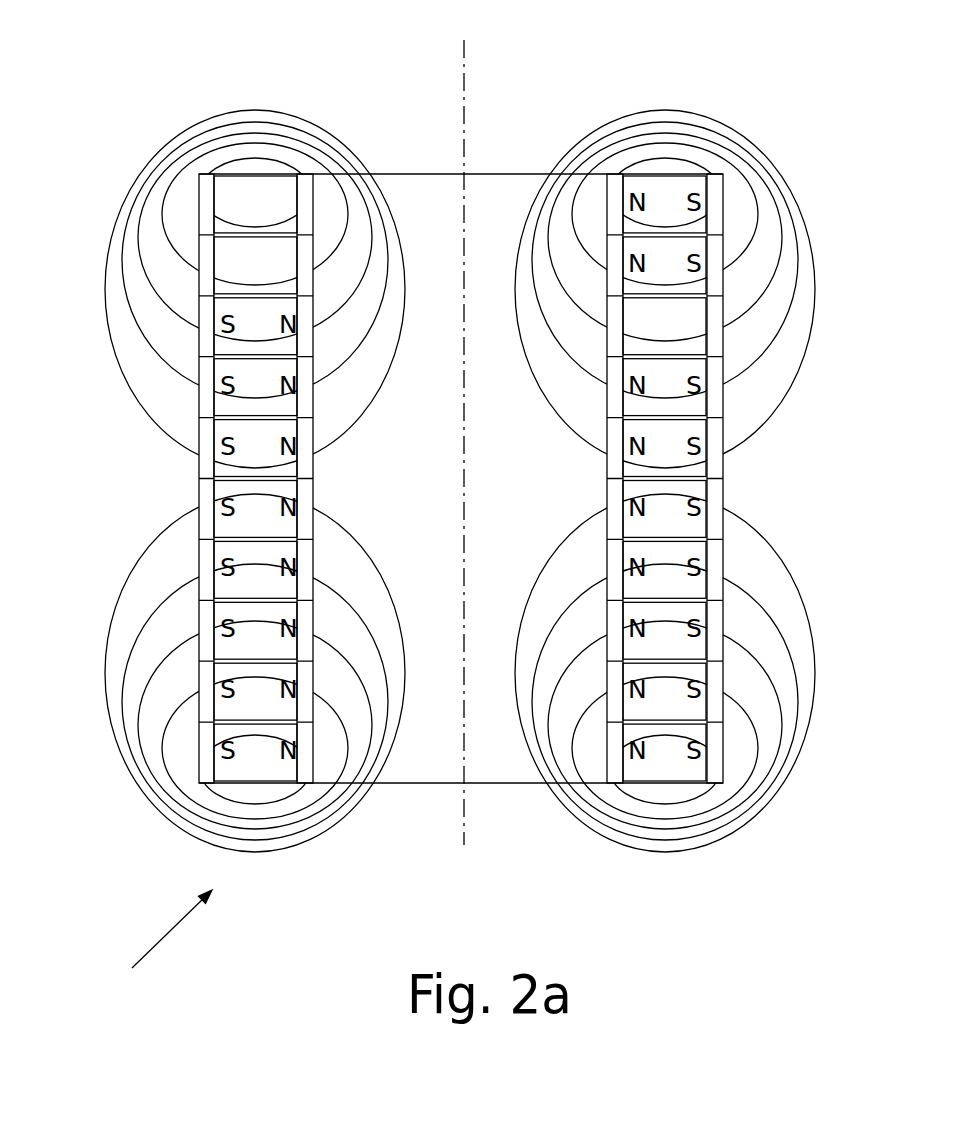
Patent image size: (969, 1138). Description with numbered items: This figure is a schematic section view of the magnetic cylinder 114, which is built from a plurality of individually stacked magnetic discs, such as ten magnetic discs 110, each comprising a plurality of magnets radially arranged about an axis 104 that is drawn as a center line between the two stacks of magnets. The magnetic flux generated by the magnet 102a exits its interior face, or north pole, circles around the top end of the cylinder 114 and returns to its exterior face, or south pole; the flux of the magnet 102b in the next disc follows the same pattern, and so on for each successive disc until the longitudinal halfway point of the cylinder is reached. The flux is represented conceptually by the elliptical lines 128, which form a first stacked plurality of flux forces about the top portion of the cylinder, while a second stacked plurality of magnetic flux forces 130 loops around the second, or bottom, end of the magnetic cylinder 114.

The magnet 102a is at (223, 195).
The magnet 102b is at (230, 287).
The axis 104 is at (466, 100).
The magnetic disc 110 is at (673, 330).
The magnetic cylinder 114 is at (150, 941).
The elliptical lines 128 is at (358, 165).
The magnetic flux forces 130 is at (133, 780).